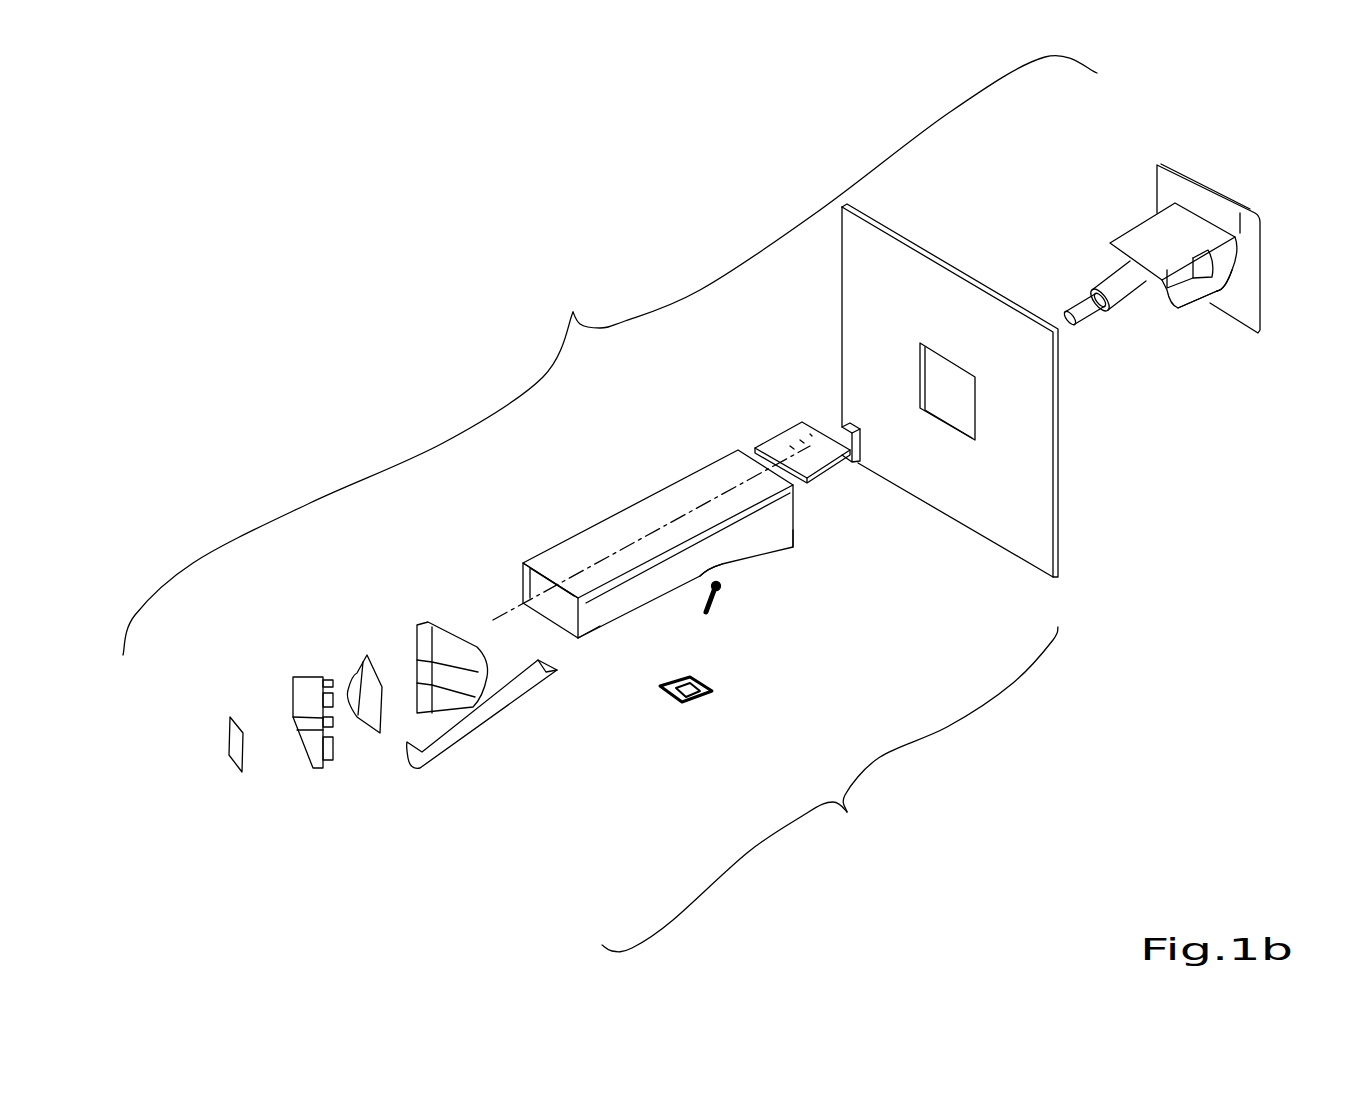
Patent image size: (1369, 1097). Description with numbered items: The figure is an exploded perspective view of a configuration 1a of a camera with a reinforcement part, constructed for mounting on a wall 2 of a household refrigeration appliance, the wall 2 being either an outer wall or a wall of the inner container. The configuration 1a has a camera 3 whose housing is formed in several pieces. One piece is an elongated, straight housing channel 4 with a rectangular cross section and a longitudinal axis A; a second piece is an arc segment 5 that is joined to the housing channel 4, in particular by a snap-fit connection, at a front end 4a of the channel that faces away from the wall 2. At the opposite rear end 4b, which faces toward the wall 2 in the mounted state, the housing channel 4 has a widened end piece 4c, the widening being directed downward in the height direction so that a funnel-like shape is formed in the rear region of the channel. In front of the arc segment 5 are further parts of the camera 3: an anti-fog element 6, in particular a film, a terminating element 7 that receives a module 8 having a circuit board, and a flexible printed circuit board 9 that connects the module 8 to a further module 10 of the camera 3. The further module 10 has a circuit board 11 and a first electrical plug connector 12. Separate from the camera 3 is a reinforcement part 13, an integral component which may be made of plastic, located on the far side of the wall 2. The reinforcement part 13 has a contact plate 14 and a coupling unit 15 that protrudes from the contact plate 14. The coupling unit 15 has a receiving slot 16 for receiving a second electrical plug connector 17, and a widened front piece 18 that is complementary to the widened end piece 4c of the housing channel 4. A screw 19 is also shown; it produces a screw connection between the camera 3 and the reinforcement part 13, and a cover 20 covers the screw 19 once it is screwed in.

The configuration 1a is at (610, 355).
The wall 2 is at (1012, 503).
The camera 3 is at (830, 789).
The housing channel 4 is at (595, 510).
The front end 4a is at (597, 635).
The rear end 4b is at (779, 566).
The widened end piece 4c is at (803, 546).
The arc segment 5 is at (413, 608).
The anti-fog element 6 is at (216, 708).
The terminating element 7 is at (283, 673).
The module 8 is at (346, 658).
The flexible printed circuit board 9 is at (507, 720).
The further module 10 is at (758, 436).
The circuit board 11 is at (793, 440).
The first electrical plug connector 12 is at (850, 447).
The reinforcement part 13 is at (1159, 158).
The contact plate 14 is at (1240, 230).
The coupling unit 15 is at (1188, 314).
The receiving slot 16 is at (1148, 282).
The second electrical plug connector 17 is at (1081, 270).
The widened front piece 18 is at (1220, 277).
The screw 19 is at (720, 617).
The cover 20 is at (702, 709).
The longitudinal axis A is at (505, 613).